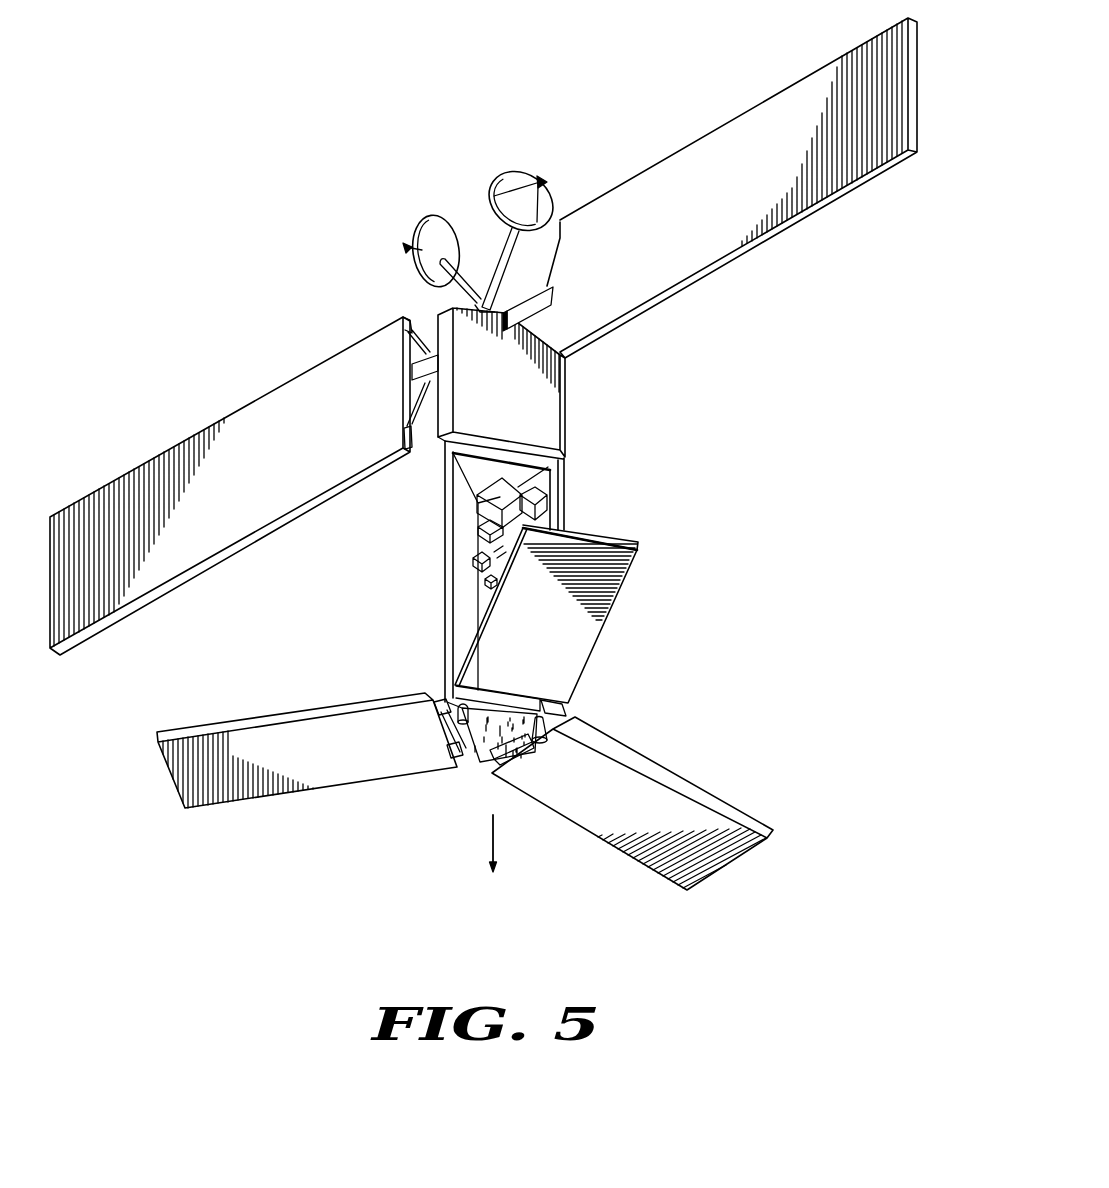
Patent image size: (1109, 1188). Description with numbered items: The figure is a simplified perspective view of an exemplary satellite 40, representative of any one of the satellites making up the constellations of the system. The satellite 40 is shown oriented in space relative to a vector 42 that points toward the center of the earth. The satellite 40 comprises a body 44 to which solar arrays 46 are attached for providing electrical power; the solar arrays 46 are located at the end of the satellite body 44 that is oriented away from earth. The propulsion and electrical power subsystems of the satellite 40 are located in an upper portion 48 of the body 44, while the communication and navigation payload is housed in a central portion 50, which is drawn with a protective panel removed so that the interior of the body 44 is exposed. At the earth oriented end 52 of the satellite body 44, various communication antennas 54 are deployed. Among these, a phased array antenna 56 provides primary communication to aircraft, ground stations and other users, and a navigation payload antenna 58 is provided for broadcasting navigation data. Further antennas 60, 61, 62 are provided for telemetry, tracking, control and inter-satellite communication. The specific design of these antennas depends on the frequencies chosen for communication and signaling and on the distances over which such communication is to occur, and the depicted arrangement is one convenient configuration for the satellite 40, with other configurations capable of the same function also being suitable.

The satellite 40 is at (313, 85).
The vector 42 is at (496, 841).
The body 44 is at (577, 130).
The solar arrays 46 is at (765, 192).
The upper portion 48 is at (519, 403).
The central portion 50 is at (592, 483).
The earth oriented end 52 is at (708, 711).
The communication antennas 54 is at (415, 841).
The phased array antenna 56 is at (569, 634).
The navigation payload antenna 58 is at (507, 705).
The antenna 60 is at (541, 748).
The antenna 61 is at (447, 728).
The antenna 62 is at (492, 186).